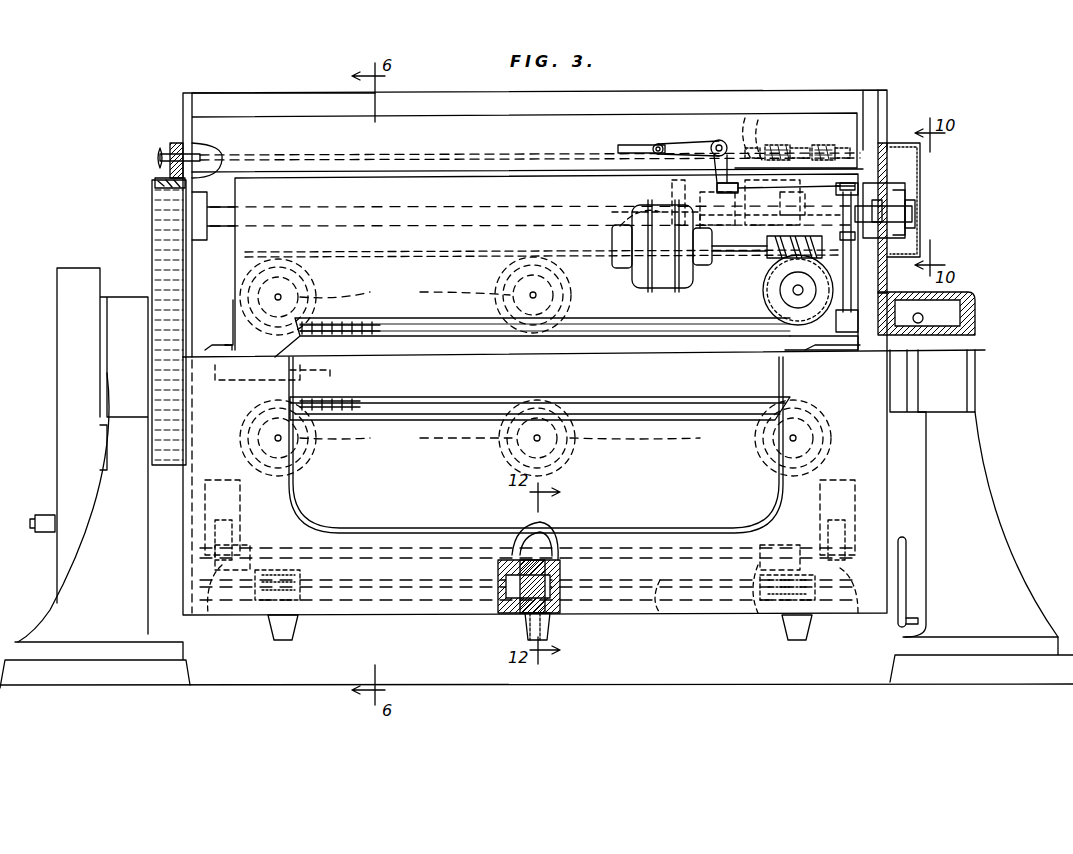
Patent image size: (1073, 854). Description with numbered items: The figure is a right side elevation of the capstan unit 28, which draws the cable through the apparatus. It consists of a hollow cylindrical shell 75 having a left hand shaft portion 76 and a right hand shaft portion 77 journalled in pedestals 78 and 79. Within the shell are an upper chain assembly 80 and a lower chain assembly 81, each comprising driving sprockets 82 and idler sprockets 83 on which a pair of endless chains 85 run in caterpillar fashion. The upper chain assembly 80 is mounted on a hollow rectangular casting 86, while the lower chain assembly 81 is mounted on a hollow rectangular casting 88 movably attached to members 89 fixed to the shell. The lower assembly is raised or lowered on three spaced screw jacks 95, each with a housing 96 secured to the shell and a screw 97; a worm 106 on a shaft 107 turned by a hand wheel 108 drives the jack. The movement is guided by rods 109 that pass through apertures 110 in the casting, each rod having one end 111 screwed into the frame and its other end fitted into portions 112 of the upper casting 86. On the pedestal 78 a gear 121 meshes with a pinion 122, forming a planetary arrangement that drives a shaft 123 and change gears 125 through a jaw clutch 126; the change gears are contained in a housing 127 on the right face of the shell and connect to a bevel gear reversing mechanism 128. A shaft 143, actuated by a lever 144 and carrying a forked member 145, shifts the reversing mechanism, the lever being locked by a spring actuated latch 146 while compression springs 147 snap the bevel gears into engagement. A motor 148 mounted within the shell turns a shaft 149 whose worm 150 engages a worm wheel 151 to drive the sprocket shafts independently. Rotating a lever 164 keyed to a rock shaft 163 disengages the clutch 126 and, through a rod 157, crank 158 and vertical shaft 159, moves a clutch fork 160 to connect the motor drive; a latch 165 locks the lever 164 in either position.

The capstan unit 28 is at (247, 81).
The hollow cylindrical shell 75 is at (780, 92).
The left hand shaft portion 76 is at (50, 355).
The right hand shaft portion 77 is at (975, 380).
The pedestal 78 is at (80, 580).
The pedestal 79 is at (990, 548).
The upper chain assembly 80 is at (435, 347).
The lower chain assembly 81 is at (521, 382).
The driving sprockets 82 is at (765, 438).
The idler sprockets 83 is at (470, 366).
The endless chains 85 is at (345, 402).
The hollow rectangular casting 86 is at (232, 270).
The hollow rectangular casting 88 is at (775, 372).
The members 89 is at (330, 563).
The screw jacks 95 is at (308, 640).
The housing 96 is at (555, 632).
The screw 97 is at (520, 624).
The worm 106 is at (760, 615).
The shaft 107 is at (660, 615).
The hand wheel 108 is at (908, 582).
The rods 109 is at (238, 490).
The apertures 110 is at (236, 526).
The end 111 is at (208, 616).
The portions 112 is at (214, 345).
The gear 121 is at (155, 470).
The pinion 122 is at (155, 184).
The shaft 123 is at (232, 226).
The change gears 125 is at (903, 190).
The jaw clutch 126 is at (625, 205).
The housing 127 is at (900, 143).
The bevel gear reversing mechanism 128 is at (818, 150).
The shaft 143 is at (526, 152).
The lever 144 is at (160, 150).
The forked member 145 is at (762, 125).
The spring actuated latch 146 is at (165, 175).
The compression springs 147 is at (795, 148).
The motor 148 is at (632, 270).
The shaft 149 is at (702, 265).
The worm 150 is at (770, 256).
The worm wheel 151 is at (763, 300).
The rod 157 is at (740, 150).
The crank 158 is at (858, 182).
The vertical shaft 159 is at (852, 237).
The clutch fork 160 is at (810, 320).
The rock shaft 163 is at (708, 142).
The lever 164 is at (660, 180).
The latch 165 is at (630, 143).